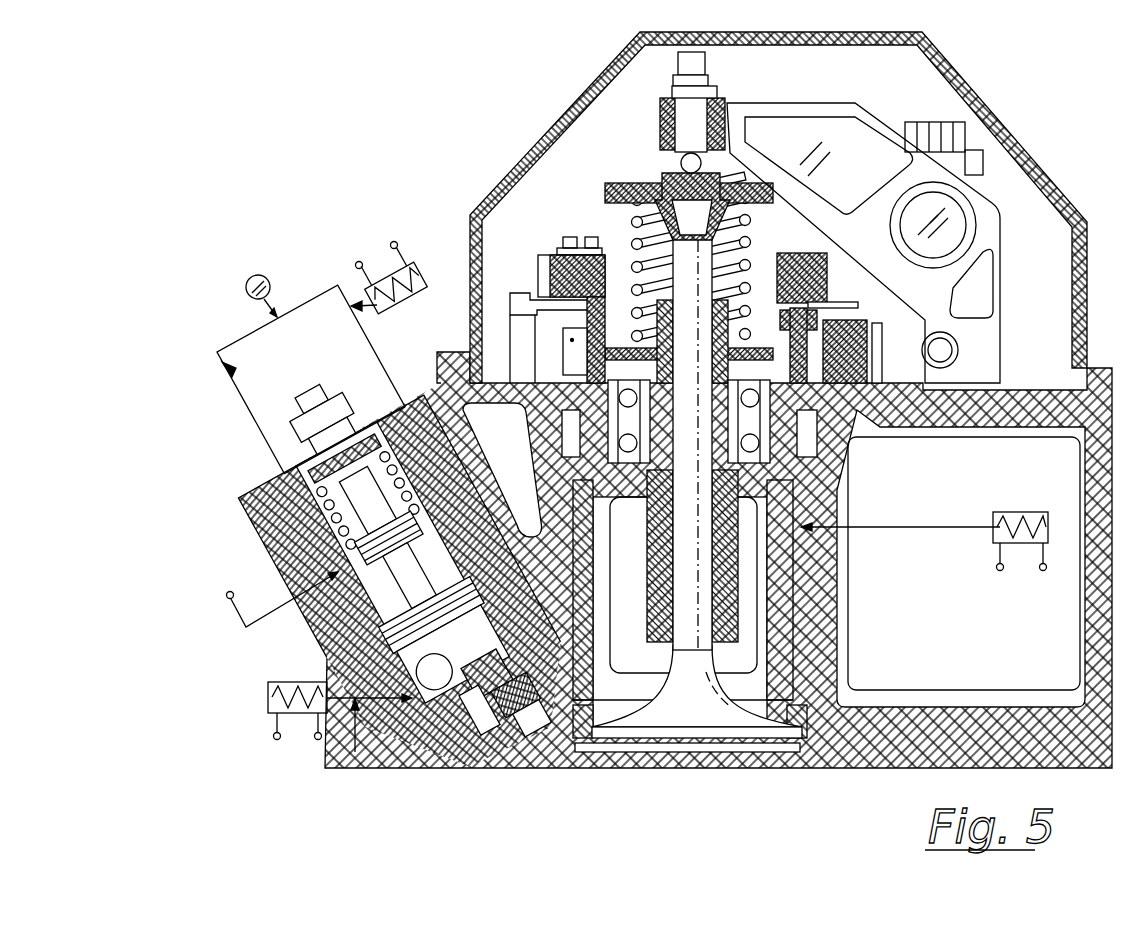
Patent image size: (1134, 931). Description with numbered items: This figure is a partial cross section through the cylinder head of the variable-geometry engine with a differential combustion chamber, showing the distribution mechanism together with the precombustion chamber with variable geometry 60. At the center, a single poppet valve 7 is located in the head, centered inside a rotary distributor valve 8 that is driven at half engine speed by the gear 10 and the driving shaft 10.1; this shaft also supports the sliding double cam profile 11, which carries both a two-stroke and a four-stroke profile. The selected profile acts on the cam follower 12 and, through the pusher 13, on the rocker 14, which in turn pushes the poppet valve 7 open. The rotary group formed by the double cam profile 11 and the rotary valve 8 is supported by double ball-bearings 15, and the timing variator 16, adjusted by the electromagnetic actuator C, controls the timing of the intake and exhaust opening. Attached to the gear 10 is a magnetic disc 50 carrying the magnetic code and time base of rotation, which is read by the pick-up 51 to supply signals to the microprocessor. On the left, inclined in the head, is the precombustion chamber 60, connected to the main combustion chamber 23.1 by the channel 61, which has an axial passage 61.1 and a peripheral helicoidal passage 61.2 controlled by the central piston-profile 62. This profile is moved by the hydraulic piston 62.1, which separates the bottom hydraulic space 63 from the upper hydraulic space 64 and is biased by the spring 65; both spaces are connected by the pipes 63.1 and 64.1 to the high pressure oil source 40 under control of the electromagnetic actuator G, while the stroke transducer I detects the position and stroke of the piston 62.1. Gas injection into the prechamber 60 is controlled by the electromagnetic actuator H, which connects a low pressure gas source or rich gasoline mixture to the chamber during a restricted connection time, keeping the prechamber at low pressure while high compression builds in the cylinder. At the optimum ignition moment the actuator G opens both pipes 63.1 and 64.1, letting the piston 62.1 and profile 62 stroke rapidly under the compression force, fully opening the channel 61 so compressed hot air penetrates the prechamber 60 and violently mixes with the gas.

The poppet valve 7 is at (730, 743).
The rotary distributor valve 8 is at (780, 607).
The gear 10 is at (550, 277).
The driving shaft 10.1 is at (555, 247).
The double cam profile 11 is at (572, 352).
The cam follower 12 is at (823, 360).
The pusher 13 is at (897, 383).
The rocker 14 is at (848, 130).
The double ball-bearings 15 is at (793, 463).
The timing variator 16 is at (800, 553).
The main combustion chamber 23.1 is at (797, 770).
The high pressure oil source 40 is at (262, 275).
The magnetic disc 50 is at (843, 305).
The pick-up 51 is at (508, 313).
The precombustion chamber with variable geometry 60 is at (367, 660).
The channel 61 is at (520, 747).
The axial passage 61.1 is at (490, 743).
The peripheral helicoidal passage 61.2 is at (473, 730).
The central piston-profile 62 is at (440, 707).
The hydraulic piston 62.1 is at (377, 553).
The bottom hydraulic space 63 is at (450, 540).
The pipe 63.1 is at (333, 290).
The upper hydraulic space 64 is at (463, 473).
The pipe 64.1 is at (224, 365).
The spring 65 is at (383, 413).
The electromagnetic actuator G is at (389, 275).
The electromagnetic actuator H is at (340, 717).
The stroke transducer I is at (274, 599).
The electromagnetic actuator C is at (924, 547).